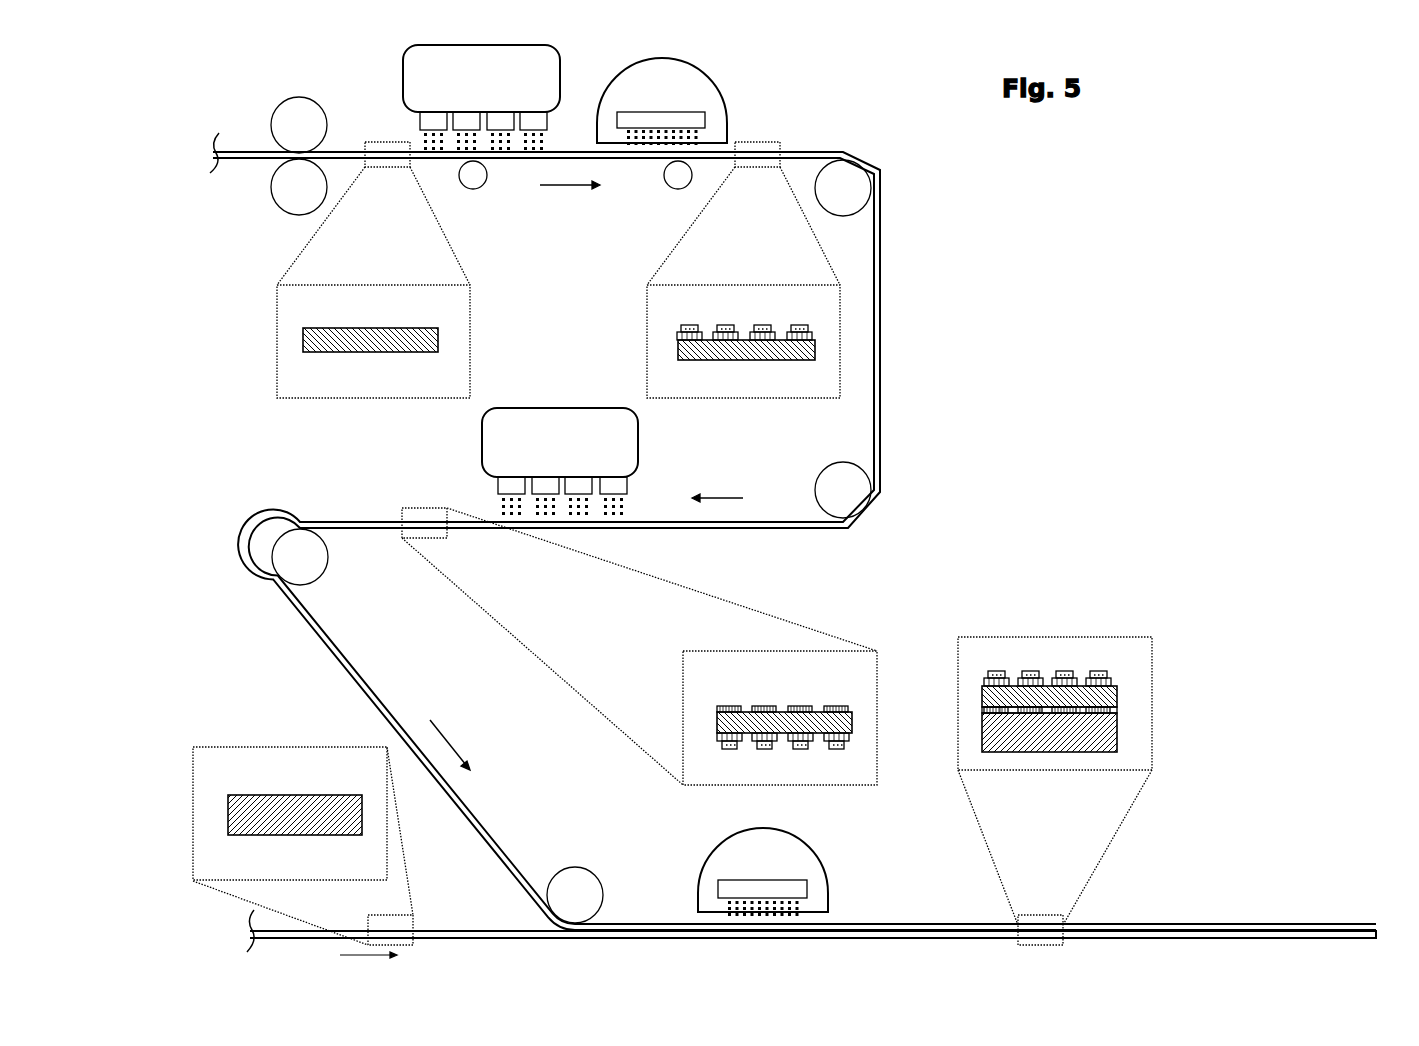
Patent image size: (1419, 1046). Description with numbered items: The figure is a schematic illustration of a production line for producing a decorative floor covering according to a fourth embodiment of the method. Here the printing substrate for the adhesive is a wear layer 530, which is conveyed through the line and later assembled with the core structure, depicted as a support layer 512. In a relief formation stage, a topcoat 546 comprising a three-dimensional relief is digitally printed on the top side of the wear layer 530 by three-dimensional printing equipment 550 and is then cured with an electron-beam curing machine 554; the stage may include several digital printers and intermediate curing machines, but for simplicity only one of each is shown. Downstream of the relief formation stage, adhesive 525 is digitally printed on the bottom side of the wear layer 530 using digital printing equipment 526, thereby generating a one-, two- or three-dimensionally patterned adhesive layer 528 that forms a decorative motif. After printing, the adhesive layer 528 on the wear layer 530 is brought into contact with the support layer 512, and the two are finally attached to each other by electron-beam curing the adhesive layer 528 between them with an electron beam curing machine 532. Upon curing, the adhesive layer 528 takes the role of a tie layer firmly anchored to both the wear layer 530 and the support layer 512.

The support layer 512 is at (284, 795).
The adhesive 525 is at (622, 512).
The digital printing equipment 526 is at (640, 439).
The adhesive layer 528 is at (852, 708).
The wear layer 530 is at (335, 152).
The electron beam curing machine 532 is at (824, 853).
The topcoat 546 is at (828, 328).
The 3D printing equipment 550 is at (561, 60).
The electron-beam curing machine 554 is at (712, 72).